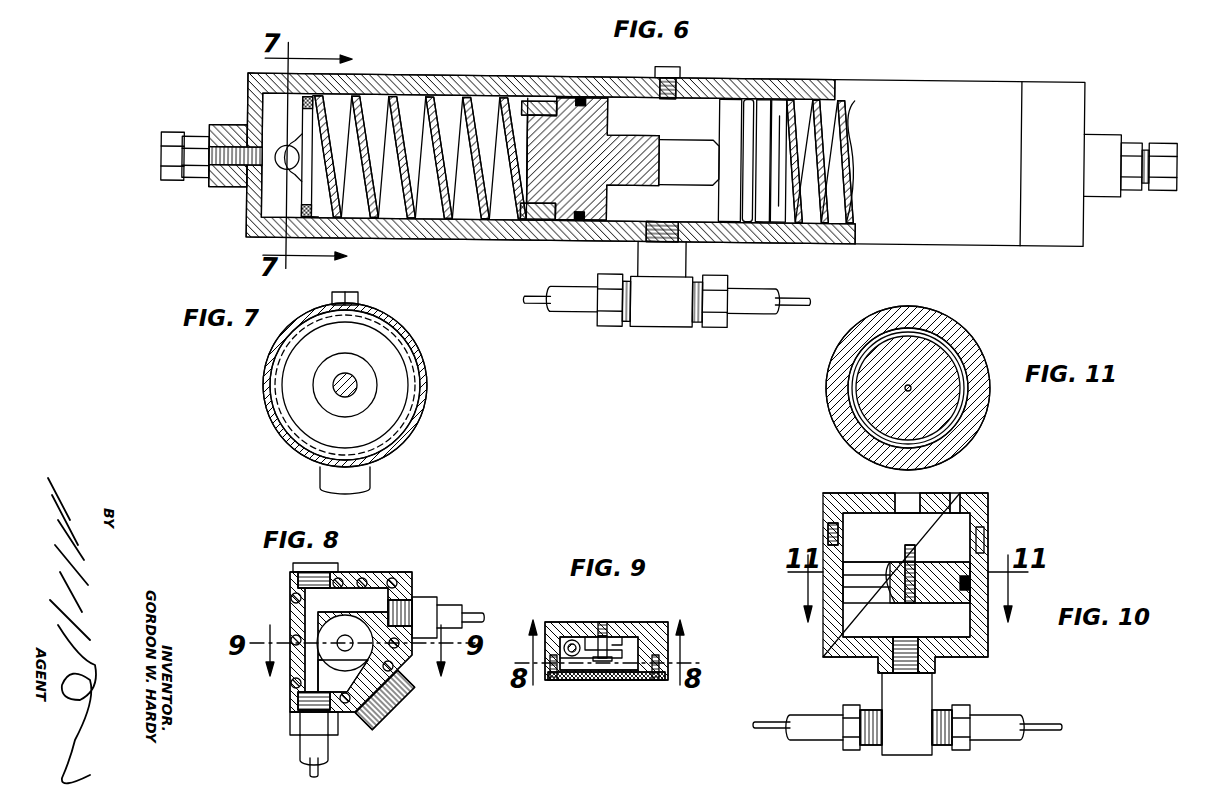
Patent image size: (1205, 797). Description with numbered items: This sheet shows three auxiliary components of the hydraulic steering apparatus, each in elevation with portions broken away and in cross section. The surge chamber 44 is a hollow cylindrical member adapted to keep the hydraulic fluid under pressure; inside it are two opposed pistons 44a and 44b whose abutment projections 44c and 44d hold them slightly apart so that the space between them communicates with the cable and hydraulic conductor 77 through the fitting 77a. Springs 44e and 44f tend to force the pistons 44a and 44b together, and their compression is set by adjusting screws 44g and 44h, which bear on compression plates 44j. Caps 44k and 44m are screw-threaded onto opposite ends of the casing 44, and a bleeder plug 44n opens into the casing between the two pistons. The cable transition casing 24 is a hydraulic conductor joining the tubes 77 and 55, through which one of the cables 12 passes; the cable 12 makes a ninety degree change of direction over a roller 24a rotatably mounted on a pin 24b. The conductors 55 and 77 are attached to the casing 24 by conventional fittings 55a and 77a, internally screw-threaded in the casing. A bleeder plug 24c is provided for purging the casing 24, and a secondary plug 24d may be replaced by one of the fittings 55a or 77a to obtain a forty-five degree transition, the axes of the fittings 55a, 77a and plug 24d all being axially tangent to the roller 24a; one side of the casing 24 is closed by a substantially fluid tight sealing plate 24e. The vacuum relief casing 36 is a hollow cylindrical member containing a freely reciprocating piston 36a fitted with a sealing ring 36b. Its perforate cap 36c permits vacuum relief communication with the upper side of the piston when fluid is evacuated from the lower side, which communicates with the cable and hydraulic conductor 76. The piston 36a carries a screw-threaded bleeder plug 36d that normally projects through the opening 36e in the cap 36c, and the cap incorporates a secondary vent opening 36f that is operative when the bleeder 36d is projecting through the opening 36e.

In FIG. 6, the surge chamber 44 is at (966, 73).
In FIG. 6, the piston 44a is at (764, 94).
In FIG. 6, the piston 44b is at (553, 94).
In FIG. 6, the abutment projection 44c is at (728, 94).
In FIG. 6, the abutment projection 44d is at (648, 135).
In FIG. 6, the spring 44e is at (830, 94).
In FIG. 6, the spring 44f is at (440, 95).
In FIG. 6, the adjusting screw 44g is at (1132, 133).
In FIG. 6, the adjusting screw 44h is at (232, 128).
In FIG. 7, the adjusting screw 44h is at (356, 383).
In FIG. 6, the compression plate 44j is at (275, 172).
In FIG. 7, the compression plate 44j is at (380, 396).
In FIG. 6, the cap 44k is at (1090, 212).
In FIG. 6, the cap 44m is at (252, 230).
In FIG. 6, the bleeder plug 44n is at (680, 68).
In FIG. 6, the cable and hydraulic conductor 77 is at (745, 284).
In FIG. 8, the cable and hydraulic conductor 77 is at (452, 605).
In FIG. 6, the fitting 77a is at (645, 300).
In FIG. 8, the fitting 77a is at (425, 597).
In FIG. 8, the cable transition casing 24 is at (402, 572).
In FIG. 9, the cable transition casing 24 is at (655, 622).
In FIG. 8, the roller 24a is at (328, 632).
In FIG. 9, the roller 24a is at (620, 640).
In FIG. 8, the pin 24b is at (352, 648).
In FIG. 9, the pin 24b is at (605, 665).
In FIG. 8, the bleeder plug 24c is at (335, 568).
In FIG. 8, the secondary plug 24d is at (400, 710).
In FIG. 9, the sealing plate 24e is at (576, 683).
In FIG. 8, the cable and hydraulic conductor 55 is at (325, 750).
In FIG. 8, the fitting 55a is at (292, 719).
In FIG. 8, the cable 12 is at (478, 613).
In FIG. 11, the vacuum relief casing 36 is at (975, 353).
In FIG. 10, the vacuum relief casing 36 is at (988, 520).
In FIG. 11, the piston 36a is at (870, 381).
In FIG. 10, the piston 36a is at (830, 522).
In FIG. 11, the sealing ring 36b is at (850, 405).
In FIG. 10, the sealing ring 36b is at (972, 580).
In FIG. 10, the perforate cap 36c is at (985, 505).
In FIG. 10, the bleeder plug 36d is at (865, 570).
In FIG. 10, the opening 36e is at (912, 498).
In FIG. 10, the secondary vent opening 36f is at (958, 500).
In FIG. 10, the cable and hydraulic conductor 76 is at (985, 730).